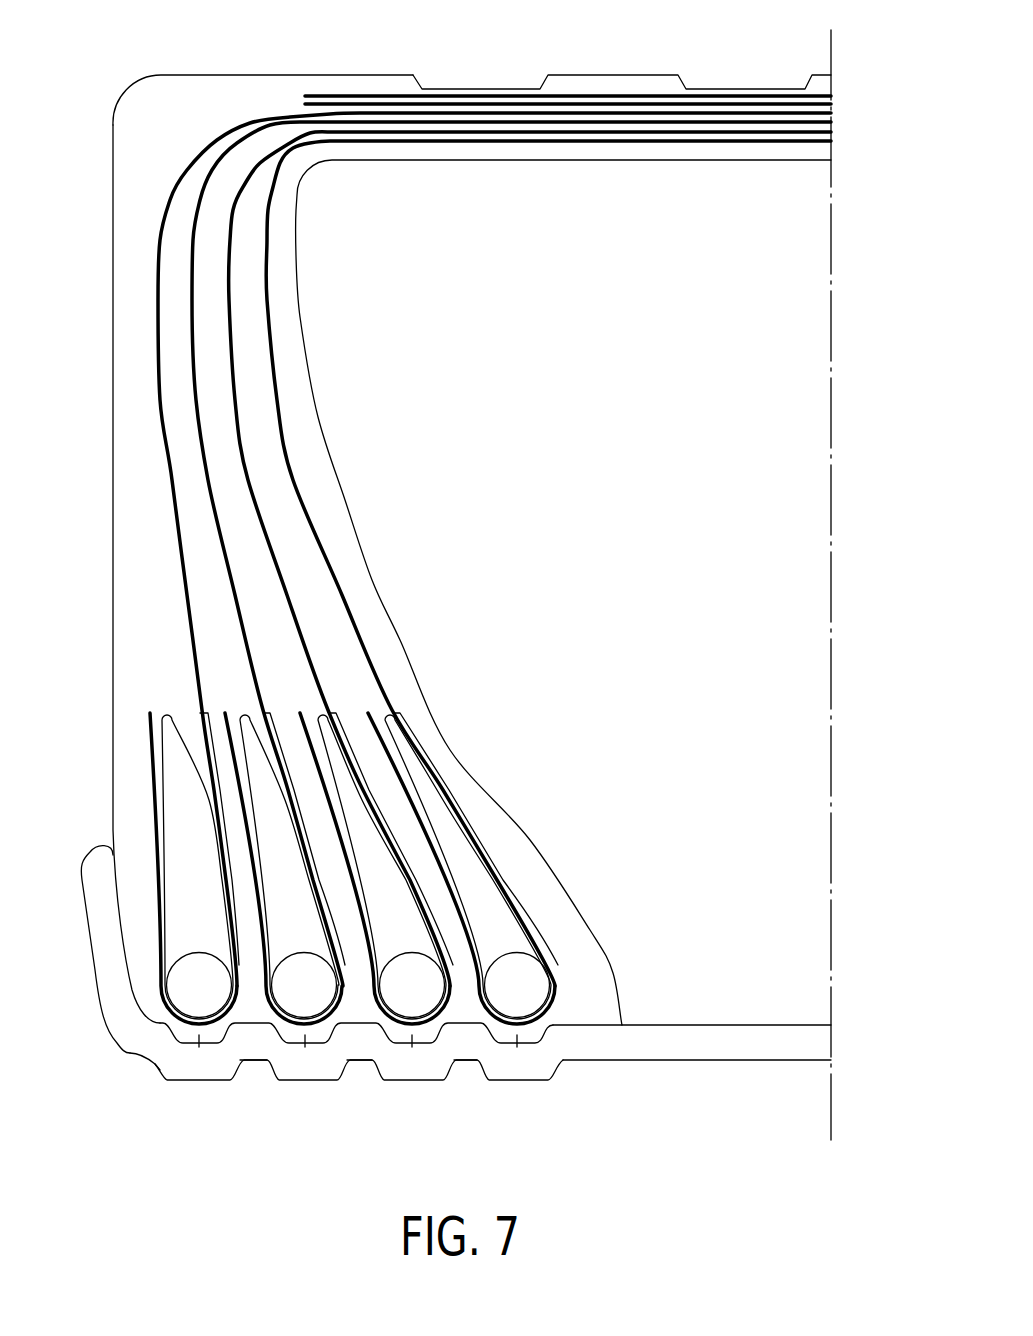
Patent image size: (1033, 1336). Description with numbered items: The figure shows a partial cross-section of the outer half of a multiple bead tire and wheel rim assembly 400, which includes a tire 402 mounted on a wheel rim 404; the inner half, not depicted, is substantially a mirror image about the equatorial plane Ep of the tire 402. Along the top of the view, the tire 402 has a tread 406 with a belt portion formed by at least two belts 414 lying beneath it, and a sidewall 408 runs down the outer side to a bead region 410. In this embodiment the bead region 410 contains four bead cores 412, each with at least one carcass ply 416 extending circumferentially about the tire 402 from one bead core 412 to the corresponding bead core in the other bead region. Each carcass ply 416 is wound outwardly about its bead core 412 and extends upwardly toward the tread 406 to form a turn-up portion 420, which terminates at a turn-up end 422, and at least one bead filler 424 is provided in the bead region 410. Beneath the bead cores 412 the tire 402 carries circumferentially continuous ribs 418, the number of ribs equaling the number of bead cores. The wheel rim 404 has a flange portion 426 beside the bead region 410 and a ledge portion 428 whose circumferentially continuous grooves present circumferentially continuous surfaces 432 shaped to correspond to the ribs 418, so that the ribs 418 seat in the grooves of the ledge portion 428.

The tire and wheel rim assembly 400 is at (79, 103).
The tire 402 is at (185, 105).
The wheel rim 404 is at (735, 1045).
The tread 406 is at (618, 86).
The sidewall 408 is at (122, 542).
The bead region 410 is at (594, 698).
The bead core 412 is at (283, 978).
The belt 414 is at (758, 95).
The carcass ply 416 is at (233, 223).
The circumferentially continuous rib 418 is at (305, 1047).
The turn-up portion 420 is at (245, 724).
The turn-up end 422 is at (300, 713).
The bead filler 424 is at (287, 885).
The flange portion 426 is at (130, 990).
The ledge portion 428 is at (130, 1057).
The circumferentially continuous surface 432 is at (199, 1047).
The equatorial plane Ep is at (831, 208).